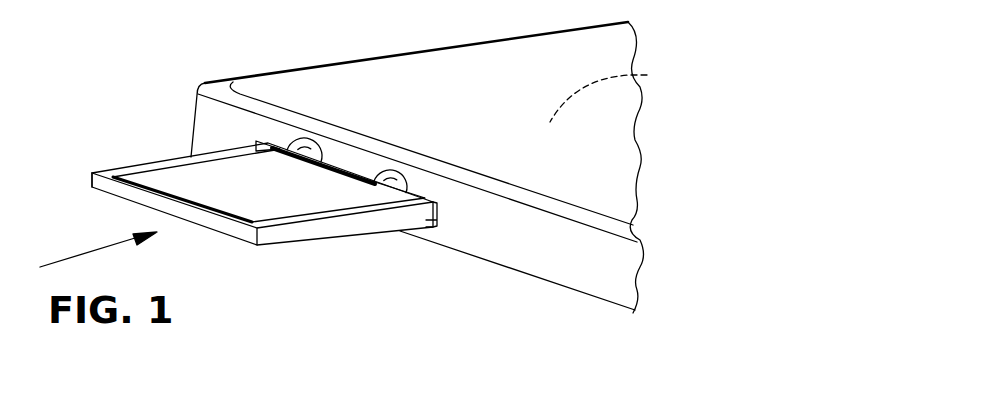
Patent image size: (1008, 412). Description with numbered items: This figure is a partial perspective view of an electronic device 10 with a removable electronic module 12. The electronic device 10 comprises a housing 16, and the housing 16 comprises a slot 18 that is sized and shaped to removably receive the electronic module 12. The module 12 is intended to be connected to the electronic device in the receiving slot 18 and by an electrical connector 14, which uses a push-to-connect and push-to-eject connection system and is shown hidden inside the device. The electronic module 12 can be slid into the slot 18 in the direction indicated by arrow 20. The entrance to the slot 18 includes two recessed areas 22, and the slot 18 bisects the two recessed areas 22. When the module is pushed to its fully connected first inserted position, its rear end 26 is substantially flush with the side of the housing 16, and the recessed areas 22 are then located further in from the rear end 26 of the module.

The electronic device 10 is at (634, 140).
The removable electronic module 12 is at (204, 226).
The electrical connector 14 is at (613, 92).
The housing 16 is at (541, 274).
The slot 18 is at (256, 142).
The arrow 20 is at (66, 258).
The recessed areas 22 is at (300, 147).
The rear end 26 is at (90, 182).